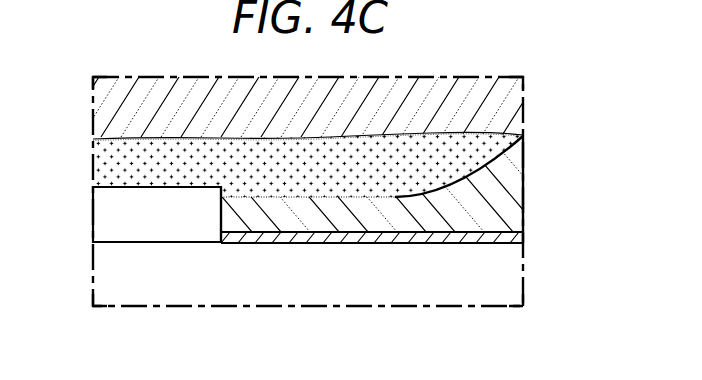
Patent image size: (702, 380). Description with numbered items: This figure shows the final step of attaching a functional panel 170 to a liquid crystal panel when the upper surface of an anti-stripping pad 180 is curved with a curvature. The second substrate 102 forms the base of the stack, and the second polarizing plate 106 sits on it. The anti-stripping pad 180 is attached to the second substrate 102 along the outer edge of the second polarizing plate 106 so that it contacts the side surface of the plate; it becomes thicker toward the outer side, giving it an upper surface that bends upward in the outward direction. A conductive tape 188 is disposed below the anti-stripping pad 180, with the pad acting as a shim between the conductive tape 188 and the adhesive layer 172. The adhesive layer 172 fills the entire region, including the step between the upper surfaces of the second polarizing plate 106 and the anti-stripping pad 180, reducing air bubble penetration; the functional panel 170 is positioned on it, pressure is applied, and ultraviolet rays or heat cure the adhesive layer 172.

The second substrate 102 is at (110, 268).
The second polarizing plate 106 is at (110, 212).
The functional panel 170 is at (110, 108).
The adhesive layer 172 is at (316, 168).
The anti-stripping pad 180 is at (498, 194).
The conductive tape 188 is at (428, 240).